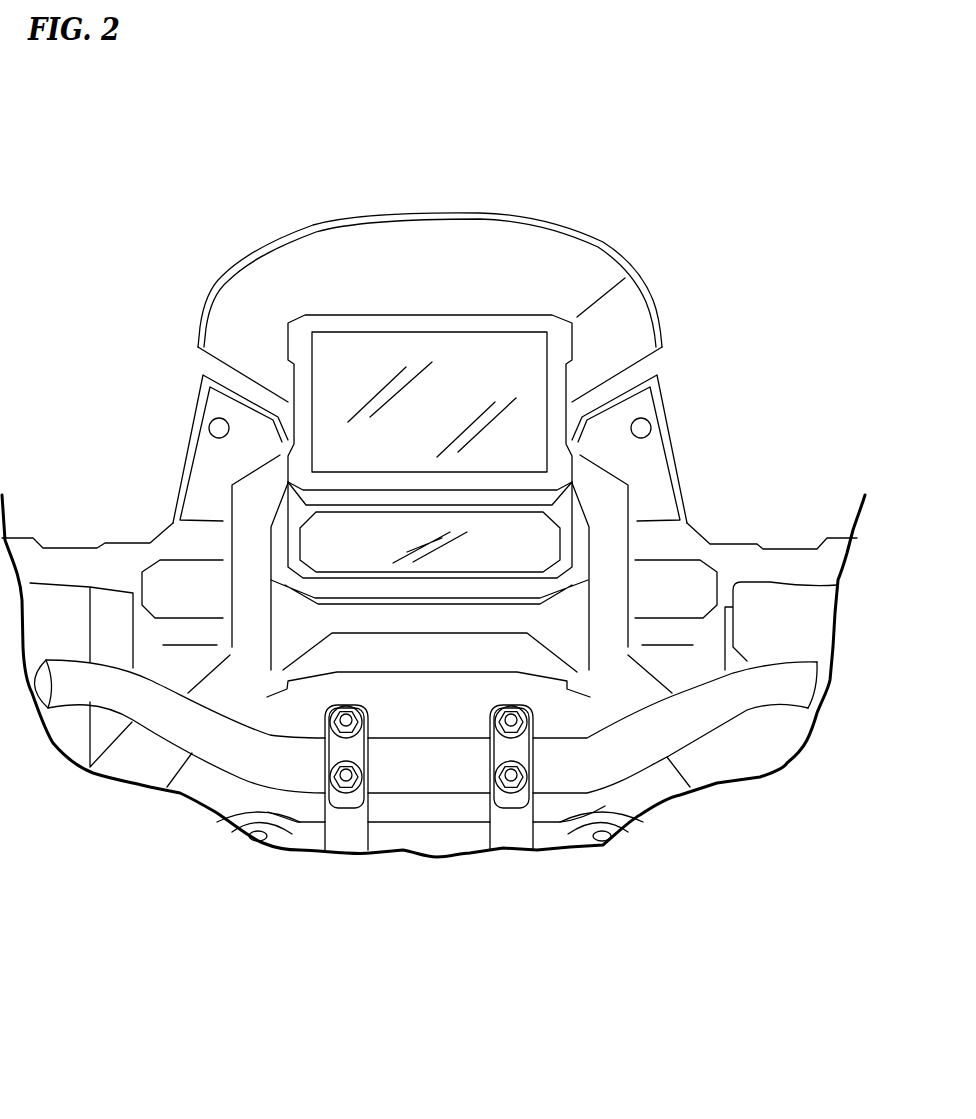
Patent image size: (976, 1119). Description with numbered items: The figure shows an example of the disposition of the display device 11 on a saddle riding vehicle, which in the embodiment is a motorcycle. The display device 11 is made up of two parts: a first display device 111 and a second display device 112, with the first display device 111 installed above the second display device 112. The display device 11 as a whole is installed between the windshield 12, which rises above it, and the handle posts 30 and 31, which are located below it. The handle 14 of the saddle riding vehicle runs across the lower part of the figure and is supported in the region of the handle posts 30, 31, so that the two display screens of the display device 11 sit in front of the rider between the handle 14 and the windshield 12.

The display device 11 is at (70, 303).
The first display device 111 is at (327, 353).
The second display device 112 is at (315, 545).
The windshield 12 is at (602, 243).
The handle 14 is at (233, 747).
The handle post 30 is at (353, 753).
The handle post 31 is at (523, 750).